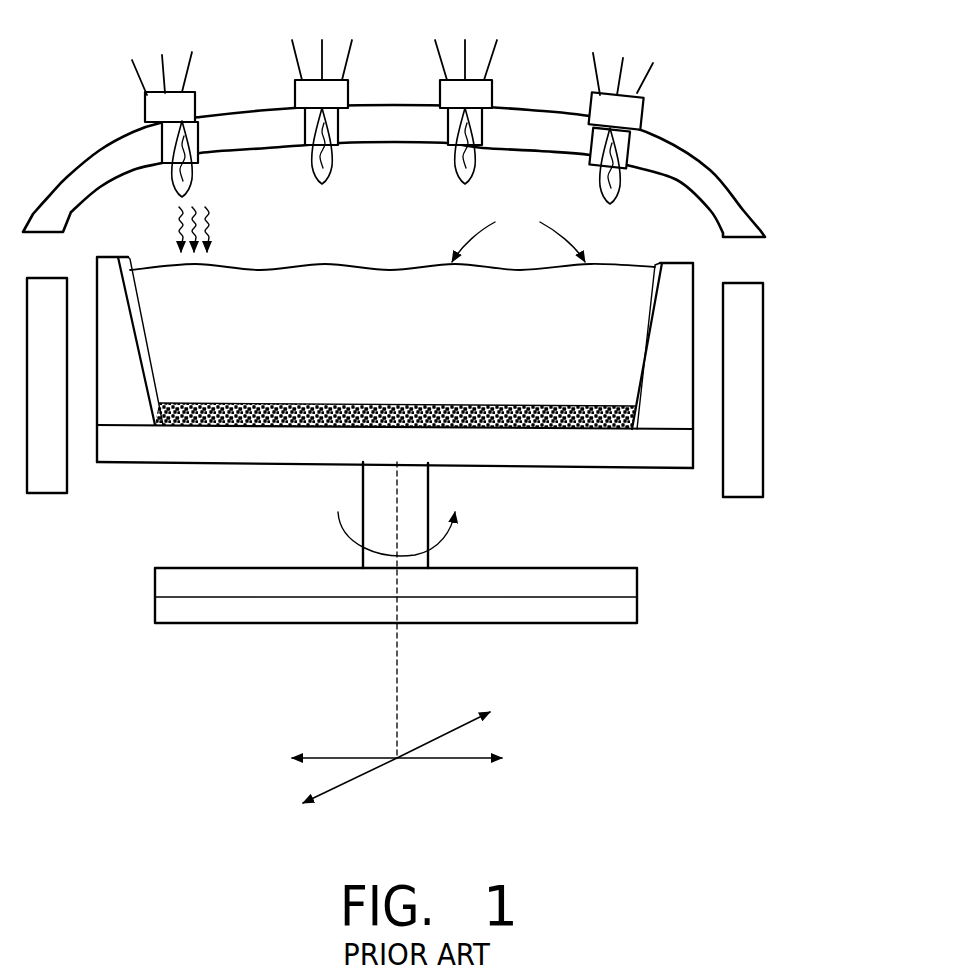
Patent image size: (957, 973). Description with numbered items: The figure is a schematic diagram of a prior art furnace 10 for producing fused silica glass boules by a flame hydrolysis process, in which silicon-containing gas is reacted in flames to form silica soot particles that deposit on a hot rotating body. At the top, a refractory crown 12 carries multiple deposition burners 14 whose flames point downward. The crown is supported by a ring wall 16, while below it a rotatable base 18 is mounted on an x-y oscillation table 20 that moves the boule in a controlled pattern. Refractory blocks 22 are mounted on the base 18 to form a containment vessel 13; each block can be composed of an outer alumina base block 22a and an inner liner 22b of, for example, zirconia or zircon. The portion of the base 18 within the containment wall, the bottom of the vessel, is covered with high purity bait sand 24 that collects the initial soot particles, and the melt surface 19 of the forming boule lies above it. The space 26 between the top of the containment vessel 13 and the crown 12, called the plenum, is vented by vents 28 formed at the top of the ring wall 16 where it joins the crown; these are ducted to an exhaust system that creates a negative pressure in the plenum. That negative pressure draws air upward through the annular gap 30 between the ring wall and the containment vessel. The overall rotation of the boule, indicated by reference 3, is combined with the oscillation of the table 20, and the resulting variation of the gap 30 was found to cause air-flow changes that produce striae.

The furnace 10 is at (436, 421).
The crown 12 is at (740, 217).
The deposition burners 14 is at (153, 108).
The containment vessel 13 is at (518, 234).
The plenum 26 is at (290, 236).
The melt surface 19 is at (245, 332).
The refractory blocks 22 is at (475, 391).
The outer alumina base block 22a is at (672, 335).
The inner liner 22b is at (650, 330).
The bait sand 24 is at (345, 403).
The rotatable base 18 is at (255, 452).
The ring wall 16 is at (750, 418).
The vents 28 is at (752, 257).
The annular gap 30 is at (703, 496).
The overall boule rotation 3 is at (445, 548).
The x-y oscillation table 20 is at (513, 615).